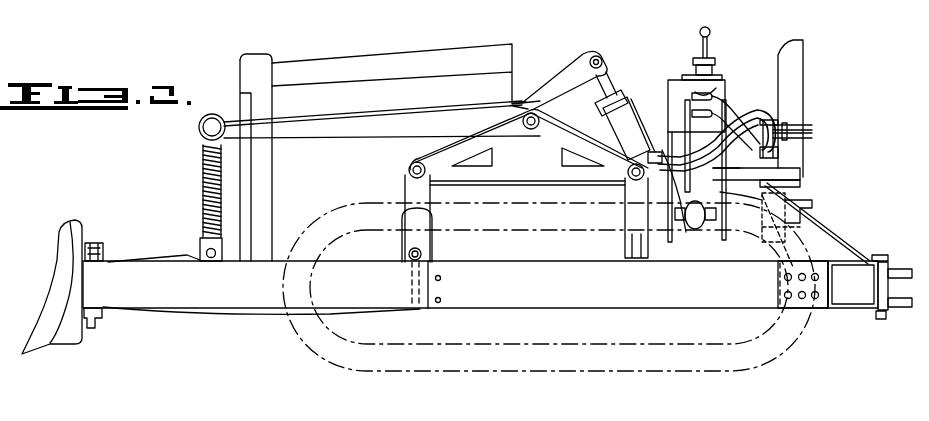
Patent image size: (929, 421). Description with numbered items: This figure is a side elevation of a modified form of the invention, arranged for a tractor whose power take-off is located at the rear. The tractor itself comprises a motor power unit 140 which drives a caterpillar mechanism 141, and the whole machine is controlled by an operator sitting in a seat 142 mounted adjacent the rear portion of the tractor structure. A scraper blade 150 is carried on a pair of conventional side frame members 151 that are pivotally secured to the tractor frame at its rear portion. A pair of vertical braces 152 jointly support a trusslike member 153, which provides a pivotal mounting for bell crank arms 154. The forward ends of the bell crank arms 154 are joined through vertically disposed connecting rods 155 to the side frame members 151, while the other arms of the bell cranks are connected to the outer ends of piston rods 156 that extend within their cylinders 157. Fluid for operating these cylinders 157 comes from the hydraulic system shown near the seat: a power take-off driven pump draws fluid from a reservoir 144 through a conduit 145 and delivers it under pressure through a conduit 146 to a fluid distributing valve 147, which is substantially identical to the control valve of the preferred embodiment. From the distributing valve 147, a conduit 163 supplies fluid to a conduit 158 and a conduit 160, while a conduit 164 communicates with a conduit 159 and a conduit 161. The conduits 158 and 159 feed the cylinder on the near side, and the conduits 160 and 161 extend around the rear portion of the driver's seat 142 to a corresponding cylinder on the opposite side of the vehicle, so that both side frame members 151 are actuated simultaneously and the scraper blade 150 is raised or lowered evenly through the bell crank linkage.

The motor power unit 140 is at (385, 60).
The caterpillar mechanism 141 is at (800, 340).
The seat 142 is at (790, 75).
The reservoir 144 is at (793, 170).
The conduit 145 is at (765, 193).
The conduit 146 is at (668, 86).
The fluid distributing valve 147 is at (708, 76).
The scraper blade 150 is at (48, 317).
The side frame members 151 is at (497, 285).
The vertical braces 152 is at (432, 205).
The trusslike member 153 is at (522, 103).
The bell crank arms 154 is at (368, 127).
The connecting rods 155 is at (200, 190).
The piston rods 156 is at (603, 63).
The cylinders 157 is at (625, 87).
The conduit 158 is at (628, 153).
The conduit 159 is at (656, 228).
The conduit 160 is at (812, 123).
The conduit 161 is at (812, 134).
The conduit 163 is at (700, 88).
The conduit 164 is at (718, 106).